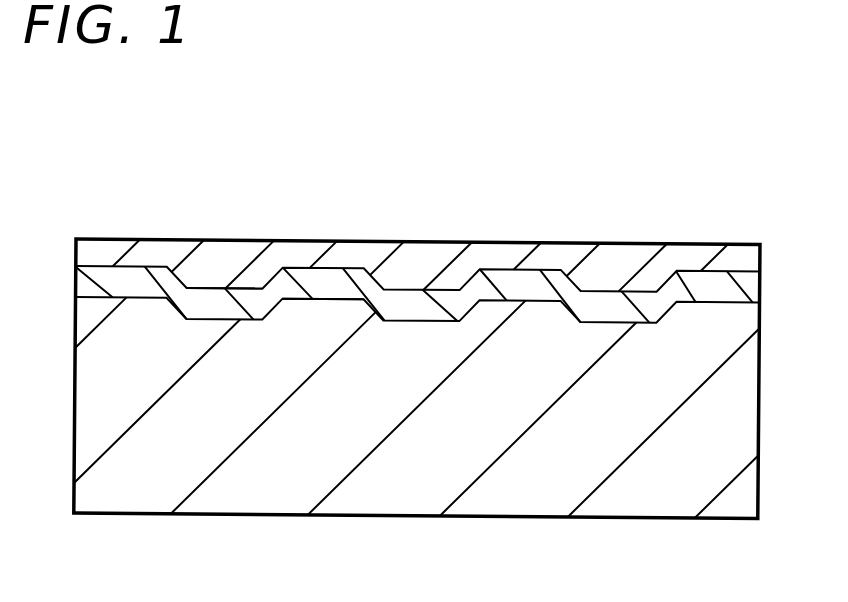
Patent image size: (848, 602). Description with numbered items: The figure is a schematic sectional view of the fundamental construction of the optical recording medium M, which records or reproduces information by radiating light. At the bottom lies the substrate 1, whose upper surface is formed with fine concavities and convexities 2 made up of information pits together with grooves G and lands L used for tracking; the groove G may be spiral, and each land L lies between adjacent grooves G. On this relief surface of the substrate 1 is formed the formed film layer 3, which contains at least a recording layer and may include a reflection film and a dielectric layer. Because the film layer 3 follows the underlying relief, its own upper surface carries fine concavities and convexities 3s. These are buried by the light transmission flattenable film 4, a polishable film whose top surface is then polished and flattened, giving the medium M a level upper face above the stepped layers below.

The substrate 1 is at (748, 420).
The fine concavities and convexities 2 is at (222, 318).
The formed film layer 3 is at (750, 285).
The fine concavities and convexities 3s is at (418, 288).
The light transmission flattenable film 4 is at (750, 258).
The groove G is at (203, 286).
The land L is at (334, 297).
The optical recording medium M is at (752, 584).